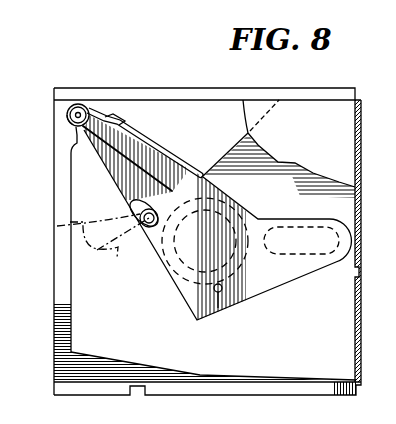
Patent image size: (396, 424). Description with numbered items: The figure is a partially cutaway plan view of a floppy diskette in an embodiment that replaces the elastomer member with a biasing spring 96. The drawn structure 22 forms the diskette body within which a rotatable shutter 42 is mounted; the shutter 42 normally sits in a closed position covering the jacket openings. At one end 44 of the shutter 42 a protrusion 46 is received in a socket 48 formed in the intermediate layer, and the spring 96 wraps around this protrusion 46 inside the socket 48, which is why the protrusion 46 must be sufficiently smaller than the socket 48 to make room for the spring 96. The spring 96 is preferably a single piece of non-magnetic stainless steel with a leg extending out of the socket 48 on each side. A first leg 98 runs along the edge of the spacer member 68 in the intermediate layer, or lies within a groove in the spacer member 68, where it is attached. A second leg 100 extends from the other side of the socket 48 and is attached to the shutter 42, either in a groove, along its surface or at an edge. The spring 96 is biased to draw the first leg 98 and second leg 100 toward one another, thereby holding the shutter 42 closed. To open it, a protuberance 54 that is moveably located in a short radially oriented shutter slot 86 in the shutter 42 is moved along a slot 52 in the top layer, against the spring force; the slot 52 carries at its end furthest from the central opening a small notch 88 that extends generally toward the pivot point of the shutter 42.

The housing 22 is at (326, 88).
The shutter 42 is at (269, 273).
The end of shutter 44 is at (72, 106).
The protrusion 46 is at (84, 106).
The socket 48 is at (70, 125).
The slot 52 is at (117, 250).
The protuberance 54 is at (167, 222).
The spacer member 68 is at (55, 326).
The shutter slot 86 is at (133, 201).
The notch 88 is at (57, 226).
The spring 96 is at (96, 117).
The first leg 98 is at (163, 147).
The second leg 100 is at (117, 155).